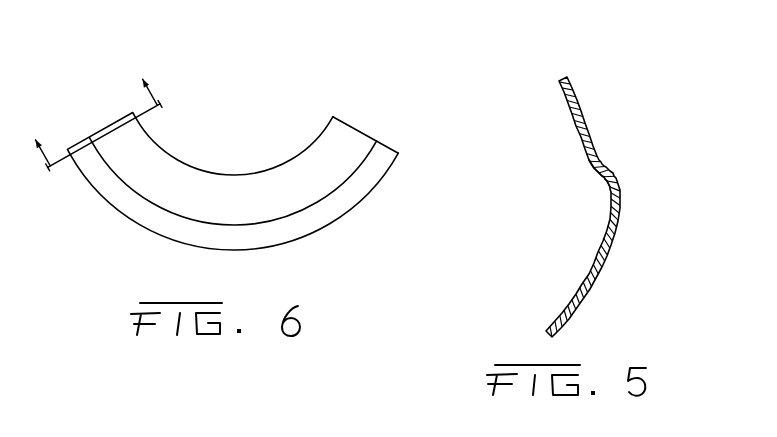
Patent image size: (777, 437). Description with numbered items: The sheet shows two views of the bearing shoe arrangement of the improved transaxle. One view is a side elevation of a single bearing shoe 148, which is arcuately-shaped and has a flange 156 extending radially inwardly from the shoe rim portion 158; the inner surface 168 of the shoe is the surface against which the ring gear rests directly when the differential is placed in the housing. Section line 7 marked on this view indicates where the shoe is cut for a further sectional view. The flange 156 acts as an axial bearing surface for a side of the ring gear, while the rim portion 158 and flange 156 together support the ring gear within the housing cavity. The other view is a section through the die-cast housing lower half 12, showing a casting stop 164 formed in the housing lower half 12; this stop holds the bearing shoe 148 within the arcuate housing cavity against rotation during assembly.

In FIG. 6, the section line 7- 7 is at (95, 113).
In FIG. 6, the bearing shoe 148 is at (250, 187).
In FIG. 6, the flange 156 is at (348, 140).
In FIG. 6, the shoe rim portion 158 is at (382, 156).
In FIG. 6, the inner surface 168 is at (298, 210).
In FIG. 5, the housing lower half 12 is at (593, 287).
In FIG. 5, the casting stop 164 is at (601, 179).